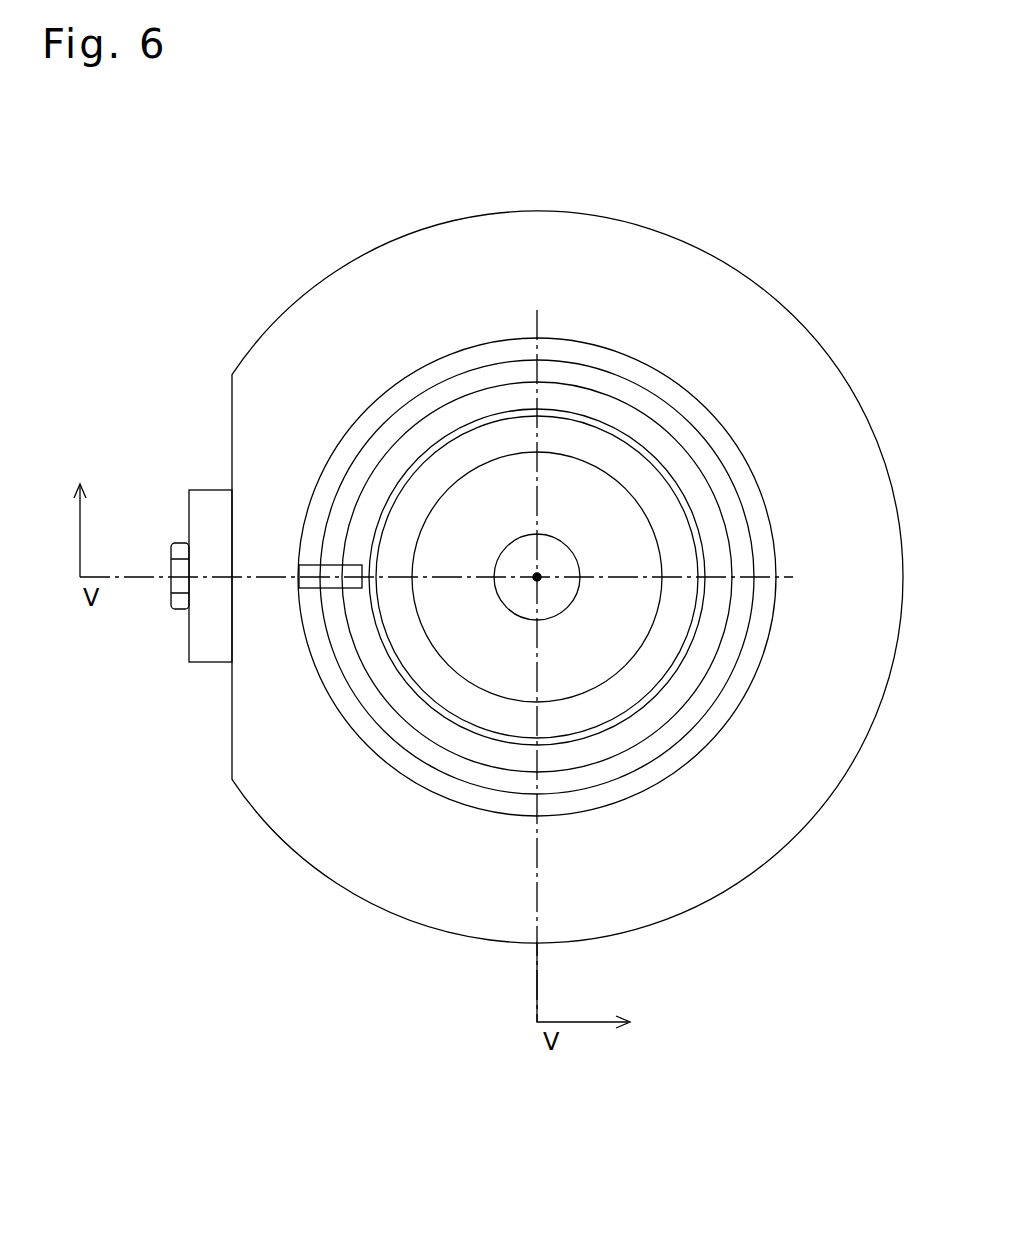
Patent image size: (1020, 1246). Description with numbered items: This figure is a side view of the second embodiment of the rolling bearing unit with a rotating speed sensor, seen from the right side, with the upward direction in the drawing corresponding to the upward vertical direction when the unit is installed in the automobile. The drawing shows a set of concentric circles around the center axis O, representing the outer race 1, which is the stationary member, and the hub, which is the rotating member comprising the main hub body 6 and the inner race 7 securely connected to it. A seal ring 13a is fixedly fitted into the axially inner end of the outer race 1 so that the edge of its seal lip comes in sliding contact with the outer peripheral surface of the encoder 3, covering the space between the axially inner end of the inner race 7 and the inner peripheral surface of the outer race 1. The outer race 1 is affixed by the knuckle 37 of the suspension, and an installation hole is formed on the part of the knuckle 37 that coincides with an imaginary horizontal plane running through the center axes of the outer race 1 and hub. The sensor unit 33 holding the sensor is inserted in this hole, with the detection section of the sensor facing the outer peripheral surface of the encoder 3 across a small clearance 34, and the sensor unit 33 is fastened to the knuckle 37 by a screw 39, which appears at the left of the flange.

The knuckle 37 is at (595, 273).
The outer race 1 is at (397, 402).
The seal ring 13a is at (513, 403).
The small clearance 34 is at (368, 586).
The encoder 3 is at (530, 745).
The inner race 7 is at (580, 714).
The main hub body 6 is at (622, 620).
The center axis O is at (537, 577).
The sensor unit 33 is at (327, 585).
The screw 39 is at (188, 543).